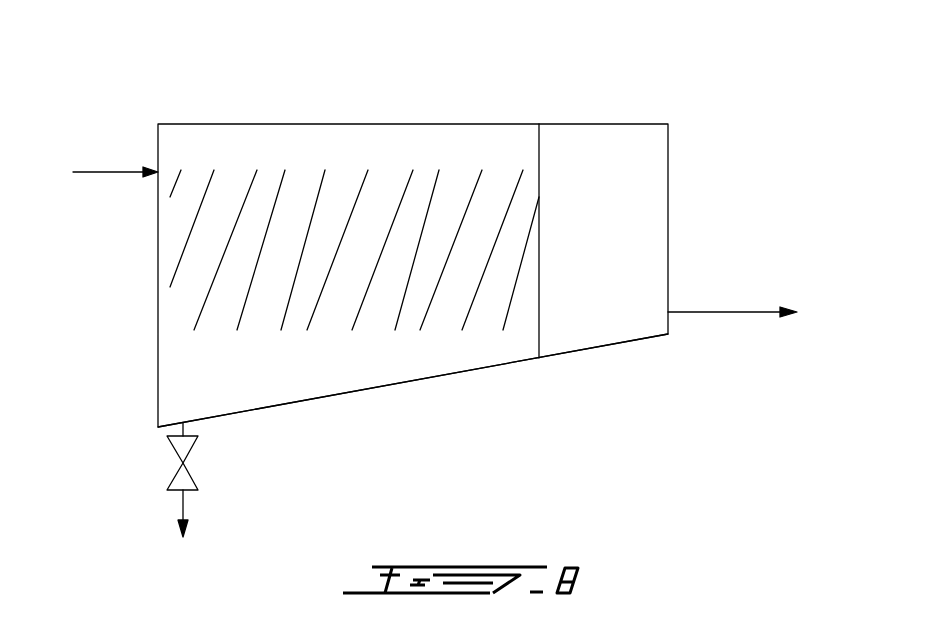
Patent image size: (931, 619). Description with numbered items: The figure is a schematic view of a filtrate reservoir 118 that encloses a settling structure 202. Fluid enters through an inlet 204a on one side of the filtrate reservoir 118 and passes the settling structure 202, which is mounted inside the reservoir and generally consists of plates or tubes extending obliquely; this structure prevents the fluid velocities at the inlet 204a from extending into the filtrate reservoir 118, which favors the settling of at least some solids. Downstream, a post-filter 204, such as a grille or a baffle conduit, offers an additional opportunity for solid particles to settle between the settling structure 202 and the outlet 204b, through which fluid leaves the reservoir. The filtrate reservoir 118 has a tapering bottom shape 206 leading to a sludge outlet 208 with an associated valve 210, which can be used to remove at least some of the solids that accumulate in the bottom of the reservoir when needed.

The filtrate reservoir 118 is at (452, 123).
The settling structure 202 is at (278, 193).
The post-filter 204 is at (542, 148).
The inlet 204a is at (105, 172).
The outlet 204b is at (713, 311).
The tapering bottom shape 206 is at (383, 388).
The sludge outlet 208 is at (184, 507).
The valve 210 is at (180, 478).